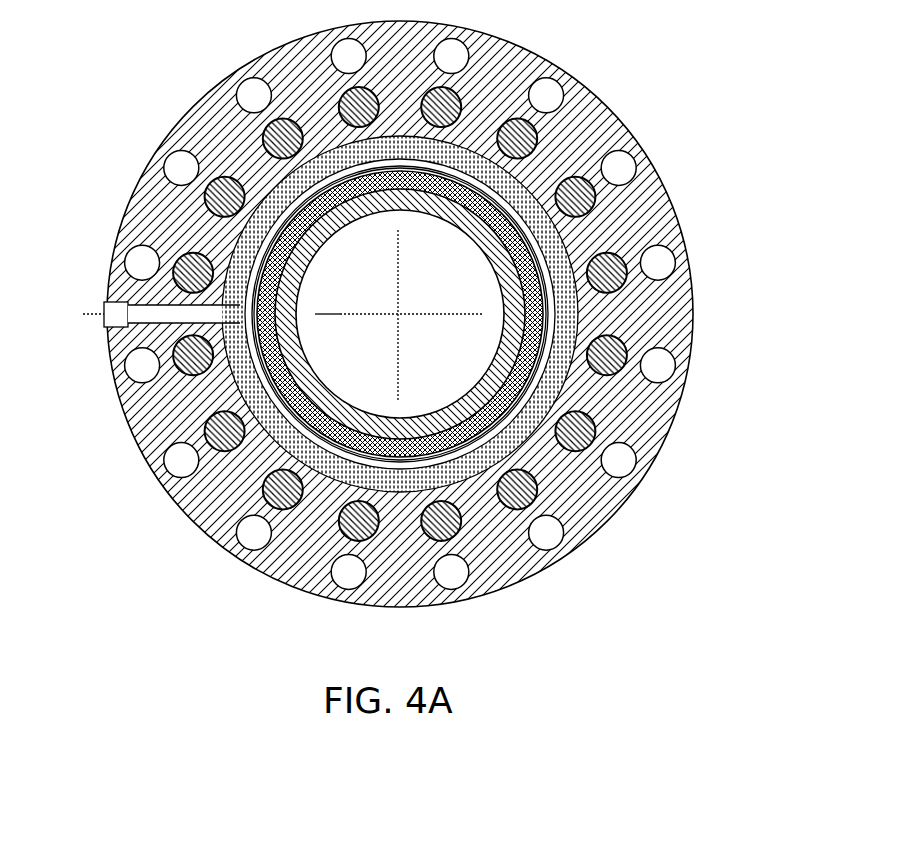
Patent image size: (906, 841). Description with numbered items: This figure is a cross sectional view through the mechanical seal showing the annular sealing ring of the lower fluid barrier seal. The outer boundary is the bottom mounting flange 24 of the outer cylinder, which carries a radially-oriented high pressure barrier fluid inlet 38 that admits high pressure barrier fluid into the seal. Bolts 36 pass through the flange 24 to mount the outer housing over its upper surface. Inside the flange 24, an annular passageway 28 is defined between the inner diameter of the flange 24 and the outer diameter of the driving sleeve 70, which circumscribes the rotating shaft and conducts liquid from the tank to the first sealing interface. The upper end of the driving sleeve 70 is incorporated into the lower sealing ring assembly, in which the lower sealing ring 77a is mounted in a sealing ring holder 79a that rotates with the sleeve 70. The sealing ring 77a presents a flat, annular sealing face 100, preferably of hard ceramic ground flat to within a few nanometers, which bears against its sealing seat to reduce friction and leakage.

The bottom mounting flange 24 is at (672, 198).
The bolts 36 is at (606, 276).
The high pressure barrier fluid inlet 38 is at (103, 313).
The sealing ring holder 79a is at (478, 237).
The sealing face 100 is at (317, 243).
The annular passageway 28 is at (447, 417).
The driving sleeve 70 is at (330, 392).
The lower sealing ring 77a is at (303, 367).